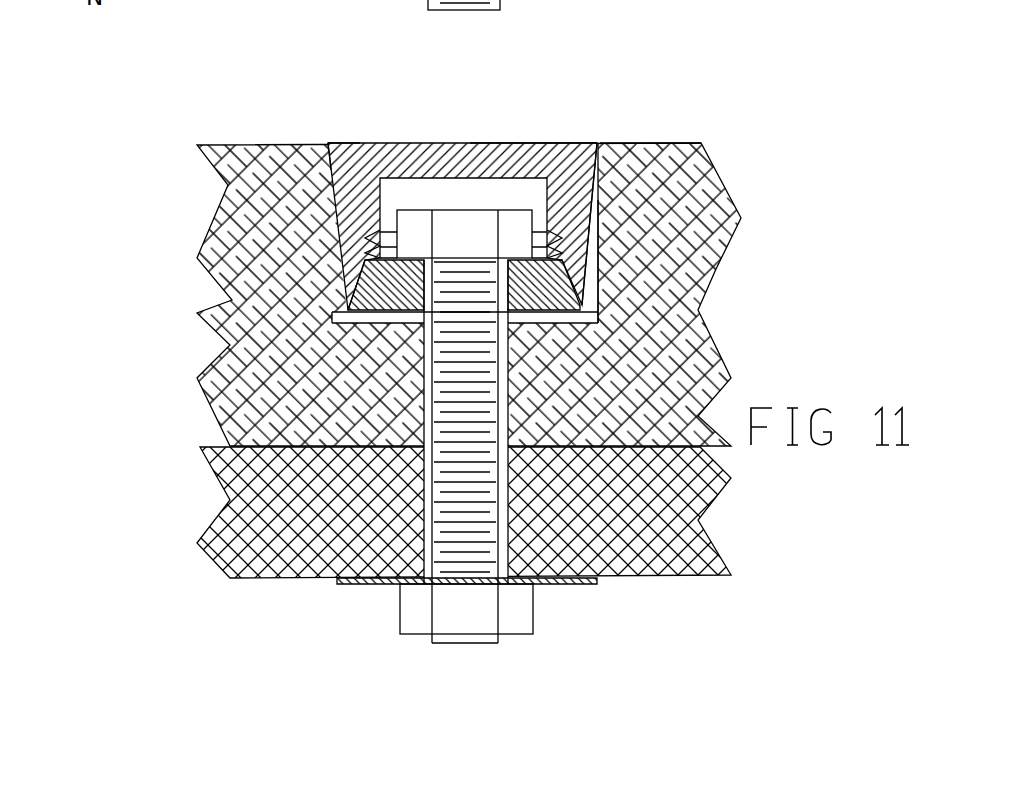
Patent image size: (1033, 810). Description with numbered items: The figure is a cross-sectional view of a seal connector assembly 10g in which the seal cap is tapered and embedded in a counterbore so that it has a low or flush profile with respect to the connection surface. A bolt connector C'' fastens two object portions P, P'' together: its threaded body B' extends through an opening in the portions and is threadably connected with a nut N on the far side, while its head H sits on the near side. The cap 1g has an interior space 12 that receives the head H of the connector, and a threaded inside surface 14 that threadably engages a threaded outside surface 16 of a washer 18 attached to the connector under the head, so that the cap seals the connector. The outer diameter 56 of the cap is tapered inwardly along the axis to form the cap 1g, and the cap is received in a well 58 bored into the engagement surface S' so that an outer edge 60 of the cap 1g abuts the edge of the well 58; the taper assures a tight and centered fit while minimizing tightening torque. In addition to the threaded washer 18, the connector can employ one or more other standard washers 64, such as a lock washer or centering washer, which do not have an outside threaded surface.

The seal assembly 10g is at (548, 117).
The interior space 12 is at (467, 183).
The outer edge 60 is at (328, 143).
The cap 1g is at (555, 143).
The engagement surface S' is at (744, 150).
The head H is at (457, 227).
The outer diameter 56 is at (590, 227).
The threaded inside surface 14 is at (372, 242).
The well 58 is at (593, 270).
The threaded outside surface 16 is at (390, 285).
The washer 18 is at (537, 296).
The standard washers 64 is at (567, 320).
The bolt connector C'' is at (303, 417).
The object portion P is at (425, 296).
The threaded body B' is at (311, 426).
The object portion P'' is at (420, 512).
The nut N is at (423, 608).